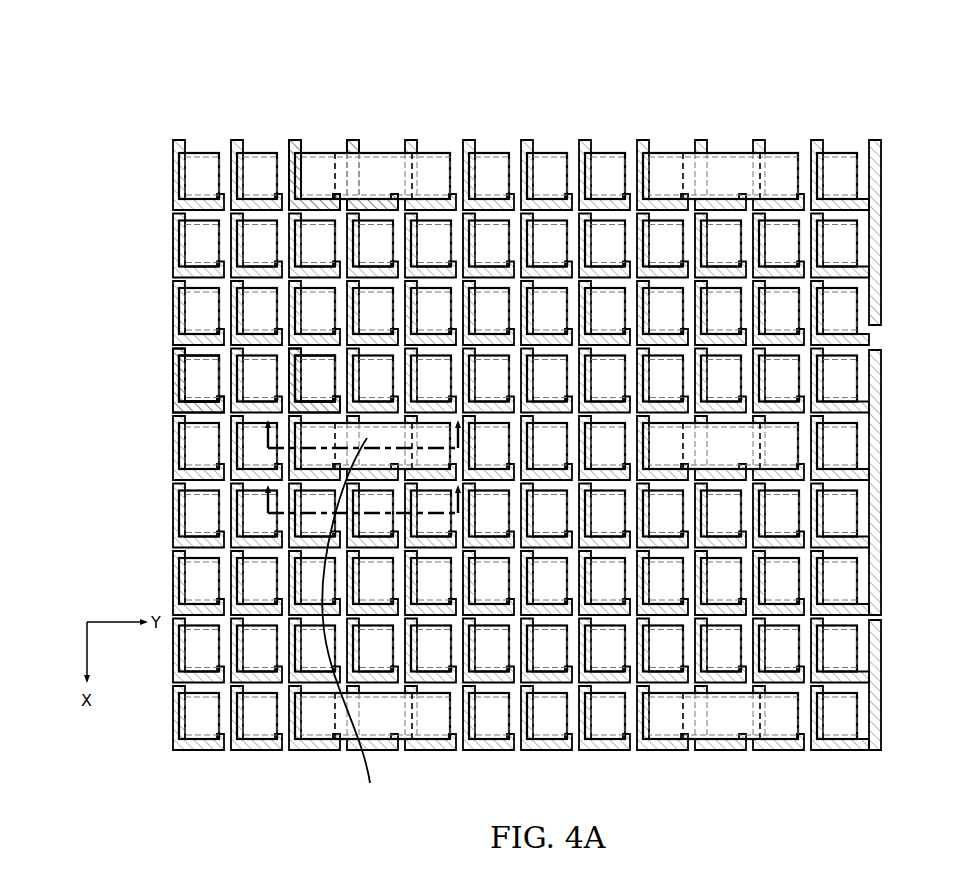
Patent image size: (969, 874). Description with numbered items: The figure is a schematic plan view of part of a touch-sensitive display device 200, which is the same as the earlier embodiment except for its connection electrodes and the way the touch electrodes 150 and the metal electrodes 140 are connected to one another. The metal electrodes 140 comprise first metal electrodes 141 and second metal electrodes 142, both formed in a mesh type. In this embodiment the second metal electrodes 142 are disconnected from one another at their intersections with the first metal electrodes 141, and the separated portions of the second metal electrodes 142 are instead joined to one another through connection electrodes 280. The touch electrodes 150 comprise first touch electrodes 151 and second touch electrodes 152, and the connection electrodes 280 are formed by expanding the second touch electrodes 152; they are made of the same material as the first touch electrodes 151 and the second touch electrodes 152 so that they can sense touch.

The touch-sensitive display device 200 is at (810, 30).
The metal electrodes 140 is at (365, 72).
The first metal electrodes 141 is at (352, 140).
The second metal electrodes 142 is at (293, 140).
The touch electrodes 150 is at (97, 315).
The first touch electrodes 151 is at (317, 375).
The second touch electrodes 152 is at (200, 378).
The connection electrodes 280 is at (380, 728).